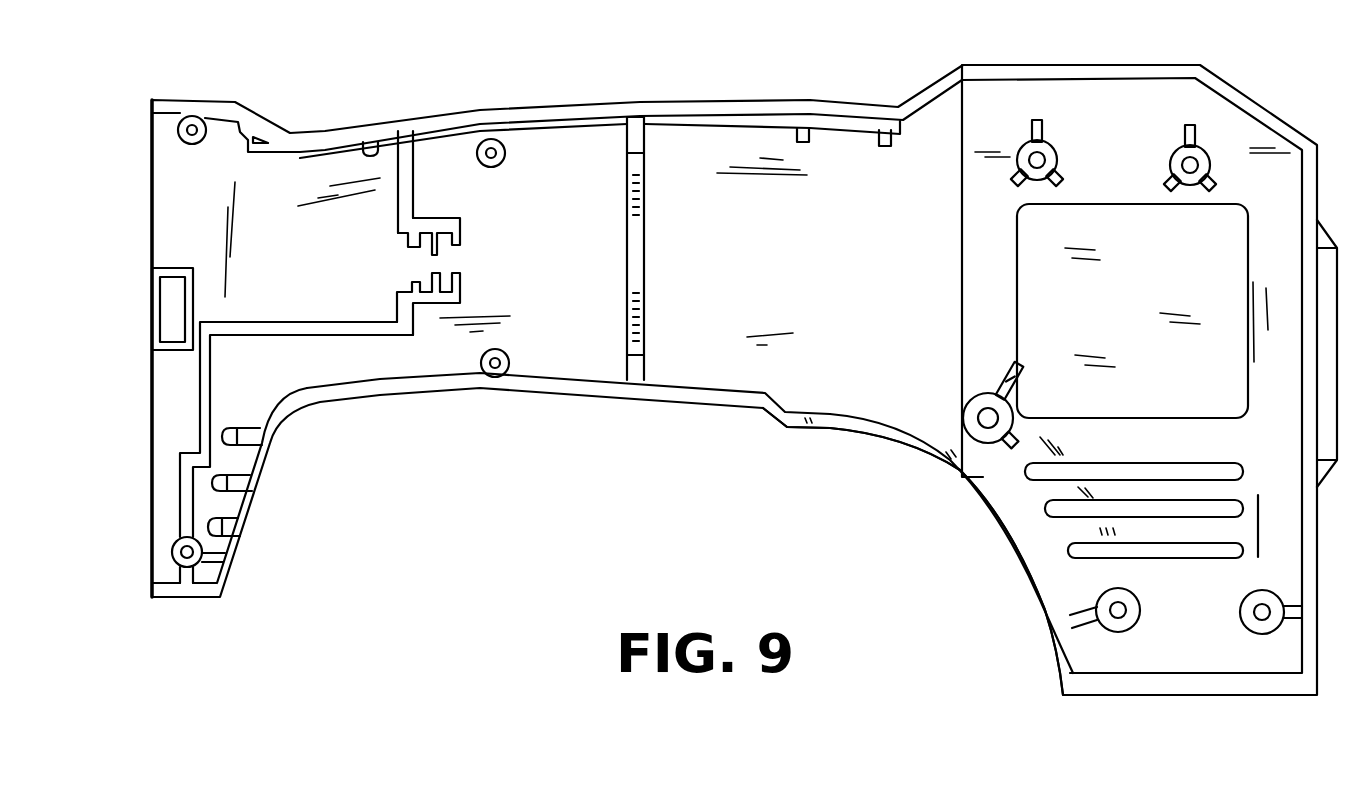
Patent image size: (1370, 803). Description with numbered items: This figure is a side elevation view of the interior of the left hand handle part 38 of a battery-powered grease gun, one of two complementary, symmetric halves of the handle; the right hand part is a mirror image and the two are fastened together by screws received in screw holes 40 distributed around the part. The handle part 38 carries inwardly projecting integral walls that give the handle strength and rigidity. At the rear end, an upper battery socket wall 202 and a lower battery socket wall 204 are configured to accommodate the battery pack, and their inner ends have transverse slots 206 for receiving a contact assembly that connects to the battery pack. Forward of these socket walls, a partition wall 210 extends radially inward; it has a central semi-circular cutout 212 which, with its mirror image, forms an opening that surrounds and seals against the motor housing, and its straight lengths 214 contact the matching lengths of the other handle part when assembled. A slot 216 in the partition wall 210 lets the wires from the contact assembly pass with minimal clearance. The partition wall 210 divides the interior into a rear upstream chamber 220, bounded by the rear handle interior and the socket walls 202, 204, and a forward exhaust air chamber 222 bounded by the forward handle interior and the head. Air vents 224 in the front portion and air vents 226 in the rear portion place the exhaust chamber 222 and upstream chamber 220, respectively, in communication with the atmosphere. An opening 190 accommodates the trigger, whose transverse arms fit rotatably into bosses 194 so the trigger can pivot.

The left hand handle part 38 is at (780, 78).
The screw holes 40 is at (190, 146).
The opening 190 is at (905, 435).
The bosses 194 is at (982, 417).
The upper battery socket wall 202 is at (413, 180).
The lower battery socket wall 204 is at (372, 337).
The transverse slots 206 is at (447, 290).
The partition wall 210 is at (650, 273).
The semi-circular cutout 212 is at (638, 262).
The straight lengths 214 is at (625, 146).
The slot 216 is at (648, 121).
The upstream chamber 220 is at (430, 353).
The exhaust air chamber 222 is at (830, 352).
The air vents 224 is at (1197, 473).
The air vents 226 is at (237, 480).